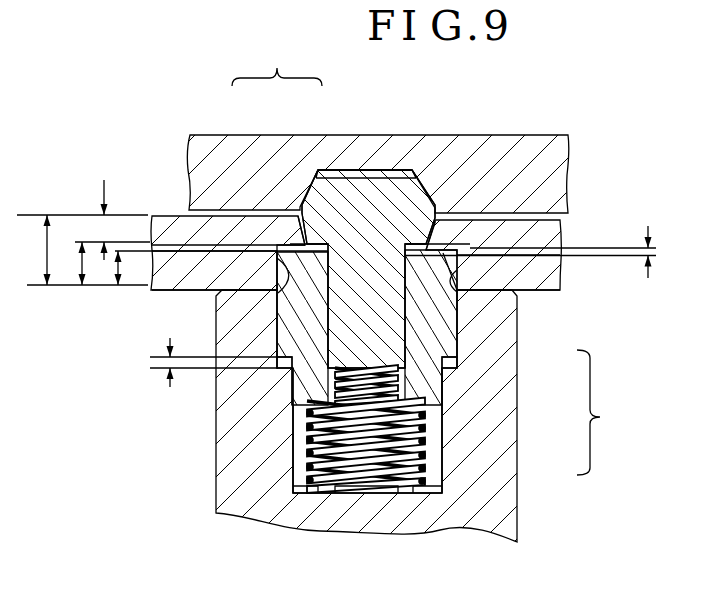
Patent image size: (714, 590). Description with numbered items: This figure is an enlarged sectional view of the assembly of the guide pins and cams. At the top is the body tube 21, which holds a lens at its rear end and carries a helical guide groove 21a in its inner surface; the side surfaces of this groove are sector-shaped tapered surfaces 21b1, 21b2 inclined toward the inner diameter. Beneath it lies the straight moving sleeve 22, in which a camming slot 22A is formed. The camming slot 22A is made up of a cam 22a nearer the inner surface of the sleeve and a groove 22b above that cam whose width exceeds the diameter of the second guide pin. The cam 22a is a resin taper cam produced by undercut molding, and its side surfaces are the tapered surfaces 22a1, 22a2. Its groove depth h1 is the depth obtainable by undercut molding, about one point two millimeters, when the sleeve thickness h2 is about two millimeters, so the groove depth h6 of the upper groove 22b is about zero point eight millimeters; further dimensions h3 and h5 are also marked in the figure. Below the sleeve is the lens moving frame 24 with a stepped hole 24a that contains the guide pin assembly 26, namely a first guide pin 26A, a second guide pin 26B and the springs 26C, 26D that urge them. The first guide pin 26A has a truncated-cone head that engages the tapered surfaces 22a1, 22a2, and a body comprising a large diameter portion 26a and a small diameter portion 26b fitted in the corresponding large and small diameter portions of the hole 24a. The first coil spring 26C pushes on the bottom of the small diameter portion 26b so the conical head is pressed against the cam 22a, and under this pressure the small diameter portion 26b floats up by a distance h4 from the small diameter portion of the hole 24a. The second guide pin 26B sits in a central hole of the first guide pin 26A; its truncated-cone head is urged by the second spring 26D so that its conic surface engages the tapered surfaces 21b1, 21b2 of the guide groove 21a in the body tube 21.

The body tube 21 is at (543, 150).
The helical guide groove 21a is at (372, 168).
The tapered surface 21b1 is at (303, 205).
The tapered surface 21b2 is at (426, 185).
The straight moving sleeve 22 is at (178, 222).
The camming slot 22A is at (277, 60).
The cam 22a is at (296, 215).
The groove 22b is at (268, 230).
The tapered surface 22a1 is at (272, 292).
The tapered surface 22a2 is at (455, 295).
The lens moving frame 24 is at (490, 512).
The hole 24a is at (443, 452).
The guide pin assembly 26 is at (600, 412).
The first guide pin 26A is at (452, 322).
The second guide pin 26B is at (453, 364).
The first coil spring 26C is at (430, 417).
The second spring 26D is at (435, 448).
The large diameter portion 26a is at (285, 346).
The small diameter portion 26b is at (310, 392).
The groove depth h1 is at (71, 263).
The thickness h2 is at (87, 250).
The dimension h3 is at (221, 268).
The distance h4 is at (209, 362).
The dimension h5 is at (537, 252).
The groove depth h6 is at (83, 220).